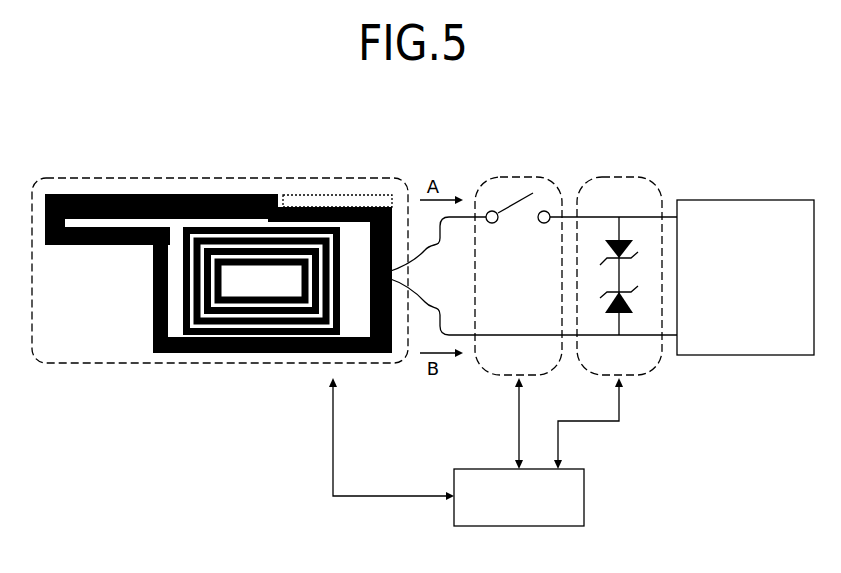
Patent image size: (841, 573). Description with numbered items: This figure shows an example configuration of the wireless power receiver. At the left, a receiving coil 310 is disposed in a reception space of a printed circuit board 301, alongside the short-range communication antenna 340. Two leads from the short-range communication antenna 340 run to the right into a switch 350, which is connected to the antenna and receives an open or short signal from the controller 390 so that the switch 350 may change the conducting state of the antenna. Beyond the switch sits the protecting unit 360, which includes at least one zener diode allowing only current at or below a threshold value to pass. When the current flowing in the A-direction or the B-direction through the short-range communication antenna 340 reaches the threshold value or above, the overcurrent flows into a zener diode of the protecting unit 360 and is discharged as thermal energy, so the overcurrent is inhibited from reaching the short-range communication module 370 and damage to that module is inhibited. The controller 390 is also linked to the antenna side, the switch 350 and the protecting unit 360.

The printed circuit board 301 is at (340, 198).
The receiving coil 310 is at (277, 200).
The short-range communication antenna 340 is at (242, 198).
The switch 350 is at (520, 176).
The protecting unit 360 is at (622, 176).
The short-range communication module 370 is at (737, 198).
The controller 390 is at (584, 496).